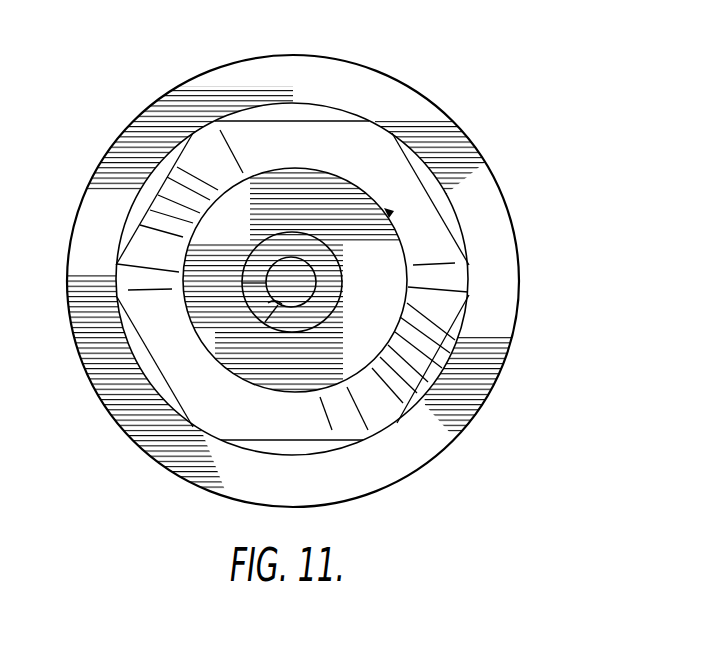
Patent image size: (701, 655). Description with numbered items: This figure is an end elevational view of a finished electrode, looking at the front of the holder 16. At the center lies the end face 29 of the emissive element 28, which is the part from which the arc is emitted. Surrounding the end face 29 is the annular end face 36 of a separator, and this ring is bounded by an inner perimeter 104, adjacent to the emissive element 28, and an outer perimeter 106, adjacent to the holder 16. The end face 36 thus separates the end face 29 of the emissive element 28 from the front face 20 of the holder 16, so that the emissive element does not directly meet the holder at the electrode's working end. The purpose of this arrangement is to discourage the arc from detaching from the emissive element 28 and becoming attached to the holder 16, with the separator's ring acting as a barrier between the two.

The holder 16 is at (511, 180).
The front face 20 is at (212, 238).
The emissive element 28 is at (237, 280).
The end face 29 is at (296, 236).
The end face 36 is at (293, 282).
The inner perimeter 104 is at (286, 304).
The outer perimeter 106 is at (270, 301).